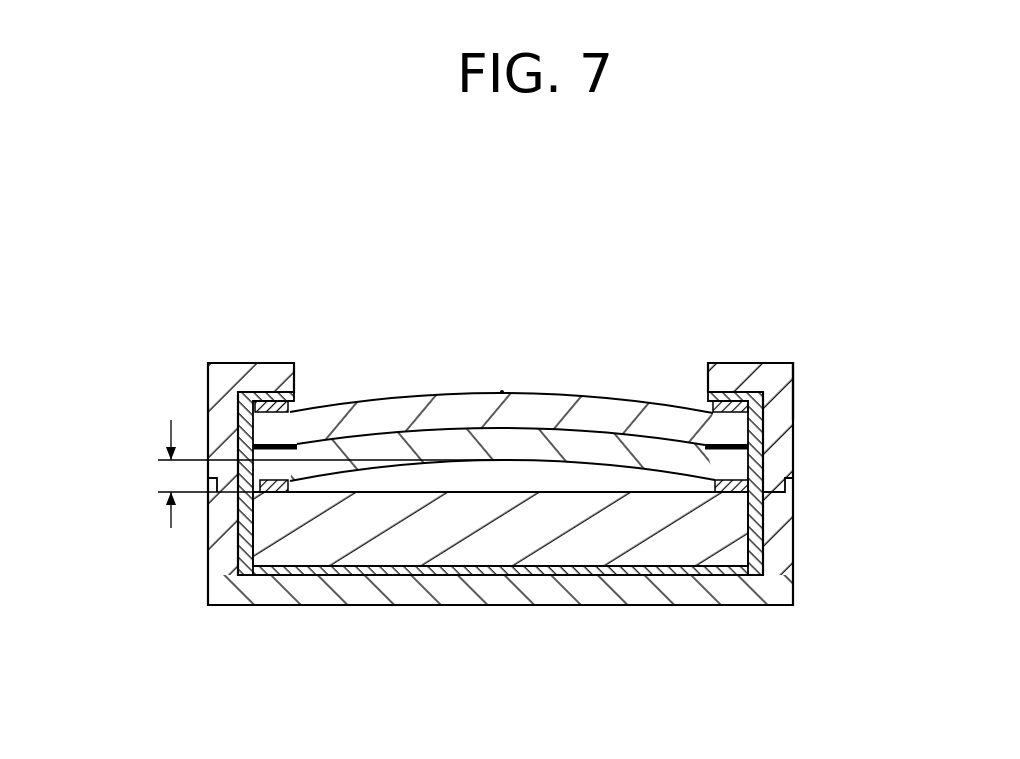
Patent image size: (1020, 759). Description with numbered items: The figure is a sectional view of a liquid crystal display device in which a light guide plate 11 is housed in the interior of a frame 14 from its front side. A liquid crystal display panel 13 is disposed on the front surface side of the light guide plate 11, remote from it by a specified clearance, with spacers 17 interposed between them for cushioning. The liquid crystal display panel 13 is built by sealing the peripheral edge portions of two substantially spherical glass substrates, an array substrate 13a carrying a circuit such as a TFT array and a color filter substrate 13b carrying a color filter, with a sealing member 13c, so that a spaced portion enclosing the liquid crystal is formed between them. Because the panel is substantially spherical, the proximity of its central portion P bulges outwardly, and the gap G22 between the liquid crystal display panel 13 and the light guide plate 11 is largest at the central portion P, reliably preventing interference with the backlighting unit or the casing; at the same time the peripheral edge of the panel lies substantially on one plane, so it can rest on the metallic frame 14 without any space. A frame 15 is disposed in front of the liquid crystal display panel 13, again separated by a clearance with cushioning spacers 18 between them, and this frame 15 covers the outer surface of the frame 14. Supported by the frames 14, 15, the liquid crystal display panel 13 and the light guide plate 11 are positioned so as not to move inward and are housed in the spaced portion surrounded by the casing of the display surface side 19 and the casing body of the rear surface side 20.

The light guide plate 11 is at (393, 547).
The liquid crystal display panel 13 is at (560, 343).
The array substrate 13a is at (538, 442).
The color filter substrate 13b is at (612, 412).
The sealing member 13c is at (703, 430).
The frame 14 is at (715, 573).
The frame 15 is at (760, 558).
The spacers 17 is at (733, 486).
The spacers 18 is at (730, 408).
The casing of the display surface side 19 is at (782, 382).
The casing body of the rear surface side 20 is at (258, 595).
The central portion P is at (502, 392).
The gap G22 is at (168, 475).